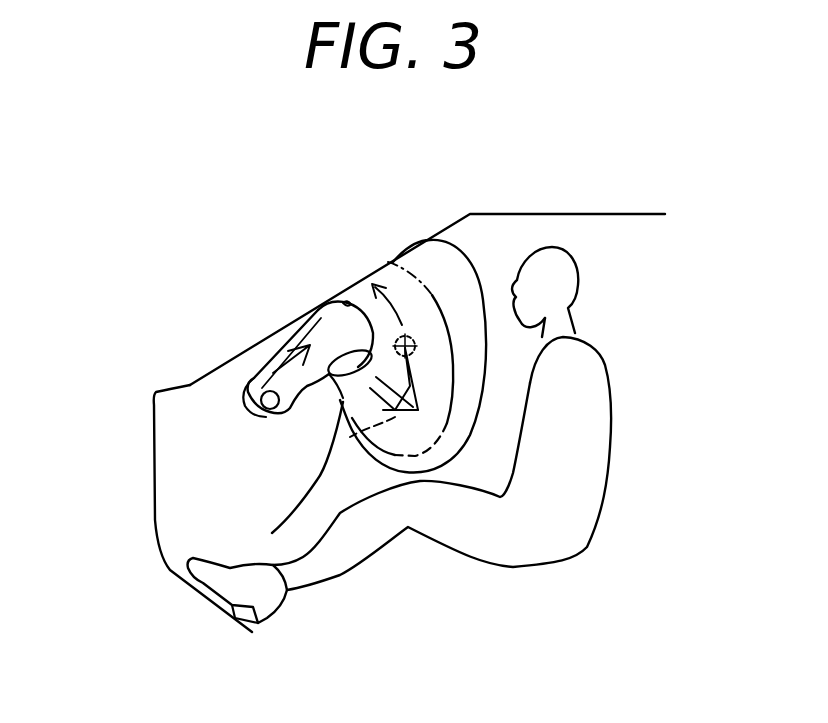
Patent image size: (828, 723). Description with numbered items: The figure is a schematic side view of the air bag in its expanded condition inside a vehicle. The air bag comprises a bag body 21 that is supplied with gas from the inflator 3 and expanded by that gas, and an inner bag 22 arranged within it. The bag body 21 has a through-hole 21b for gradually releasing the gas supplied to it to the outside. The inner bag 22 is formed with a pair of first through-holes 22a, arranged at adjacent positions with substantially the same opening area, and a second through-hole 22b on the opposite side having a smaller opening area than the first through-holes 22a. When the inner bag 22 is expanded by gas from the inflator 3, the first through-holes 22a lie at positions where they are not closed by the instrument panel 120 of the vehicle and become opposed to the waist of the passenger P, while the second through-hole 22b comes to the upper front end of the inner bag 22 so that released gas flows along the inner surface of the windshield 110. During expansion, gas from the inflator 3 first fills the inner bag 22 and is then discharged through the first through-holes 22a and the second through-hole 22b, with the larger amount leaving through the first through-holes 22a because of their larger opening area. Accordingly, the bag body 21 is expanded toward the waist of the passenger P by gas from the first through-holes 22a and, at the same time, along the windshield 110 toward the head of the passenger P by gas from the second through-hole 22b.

The windshield 110 is at (271, 330).
The instrument panel 120 is at (212, 407).
The inflator 3 is at (262, 414).
The bag body 21 is at (465, 256).
The through-hole 21b is at (415, 347).
The inner bag 22 is at (330, 323).
The first through-holes 22a is at (343, 402).
The second through-hole 22b is at (348, 302).
The passenger P is at (593, 400).